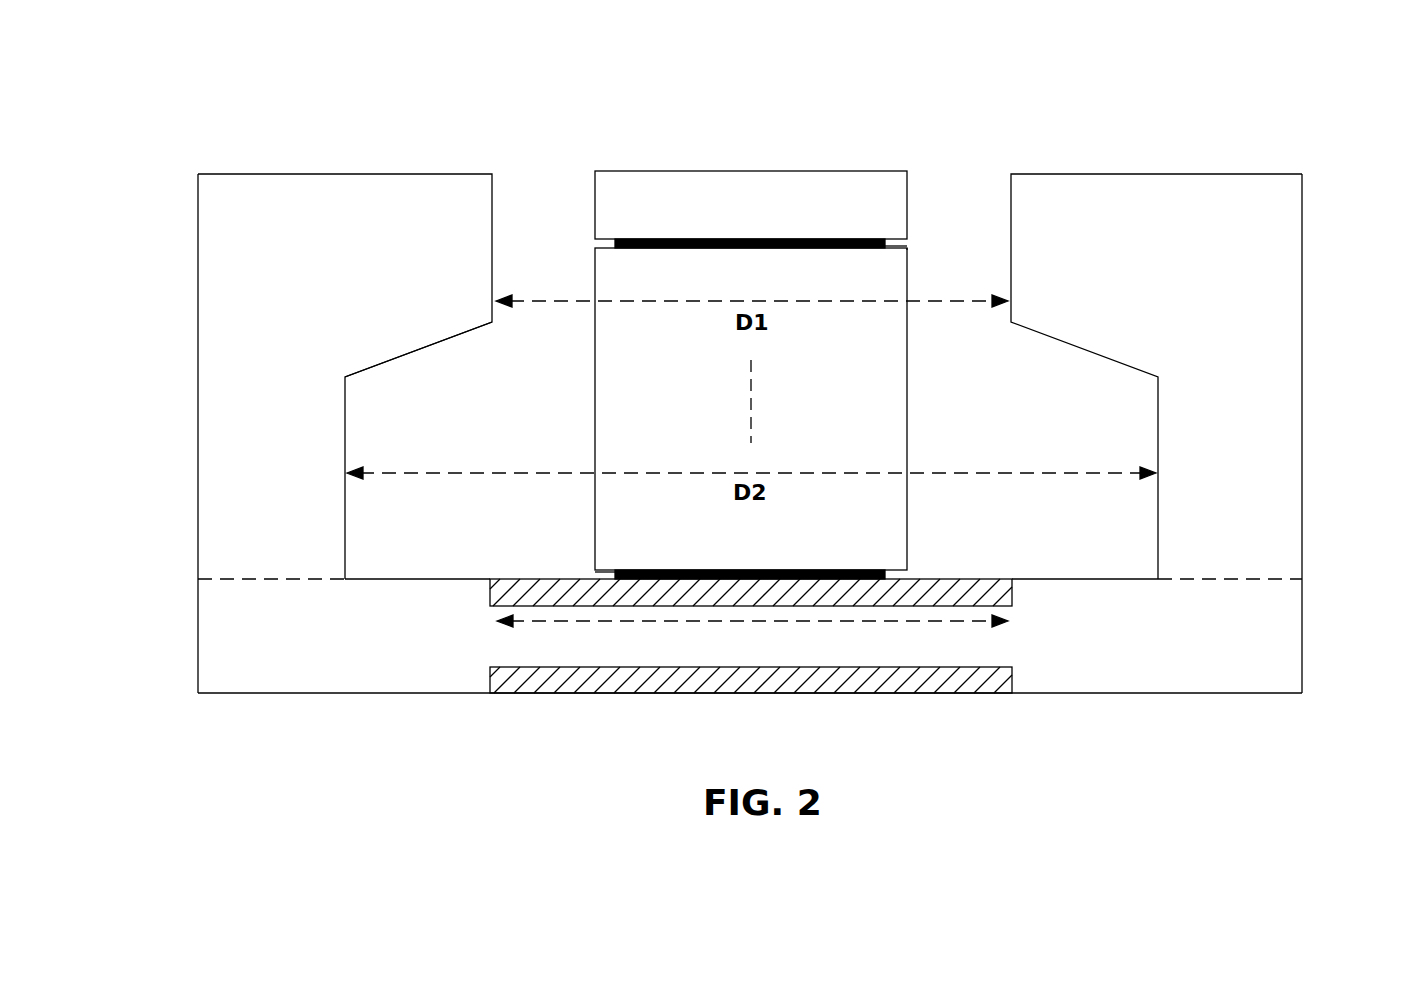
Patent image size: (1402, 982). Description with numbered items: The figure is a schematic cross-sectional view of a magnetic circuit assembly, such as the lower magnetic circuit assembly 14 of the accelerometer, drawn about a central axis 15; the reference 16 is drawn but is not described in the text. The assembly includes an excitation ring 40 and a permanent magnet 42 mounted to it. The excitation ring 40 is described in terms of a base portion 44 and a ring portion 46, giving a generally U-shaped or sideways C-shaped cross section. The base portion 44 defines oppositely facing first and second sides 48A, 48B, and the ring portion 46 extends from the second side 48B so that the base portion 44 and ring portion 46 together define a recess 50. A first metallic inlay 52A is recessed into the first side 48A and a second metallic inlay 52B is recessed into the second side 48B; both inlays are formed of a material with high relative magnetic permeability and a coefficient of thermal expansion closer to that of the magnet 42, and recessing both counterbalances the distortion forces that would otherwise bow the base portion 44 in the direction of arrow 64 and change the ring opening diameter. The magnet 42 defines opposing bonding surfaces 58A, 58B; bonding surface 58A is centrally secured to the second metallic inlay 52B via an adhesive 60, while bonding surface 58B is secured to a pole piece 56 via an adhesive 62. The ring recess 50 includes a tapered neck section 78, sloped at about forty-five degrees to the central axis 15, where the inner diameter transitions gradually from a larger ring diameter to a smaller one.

The lower magnetic circuit assembly 14 is at (1272, 132).
The central axis 15 is at (751, 412).
The first die portion 16 is at (378, 140).
The excitation ring 40 is at (734, 399).
The permanent magnet 42 is at (890, 438).
The base portion 44 is at (1287, 591).
The ring portion 46 is at (1287, 562).
The first side 48A is at (376, 703).
The second side 48B is at (432, 566).
The recess 50 is at (973, 190).
The first metallic inlay 52A is at (637, 686).
The second metallic inlay 52B is at (960, 590).
The pole piece 56 is at (741, 196).
The bonding surface 58A is at (597, 592).
The bonding surface 58B is at (910, 240).
The adhesive 60 is at (781, 570).
The adhesive 62 is at (791, 238).
The arrow 64 is at (970, 622).
The tapered neck section 78 is at (452, 346).